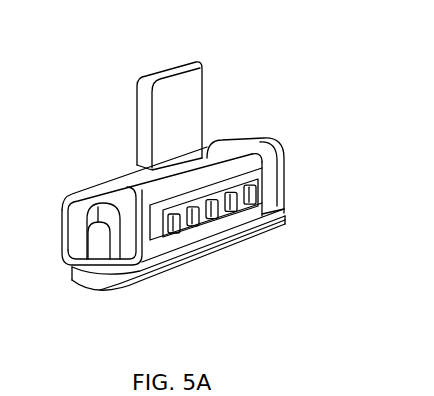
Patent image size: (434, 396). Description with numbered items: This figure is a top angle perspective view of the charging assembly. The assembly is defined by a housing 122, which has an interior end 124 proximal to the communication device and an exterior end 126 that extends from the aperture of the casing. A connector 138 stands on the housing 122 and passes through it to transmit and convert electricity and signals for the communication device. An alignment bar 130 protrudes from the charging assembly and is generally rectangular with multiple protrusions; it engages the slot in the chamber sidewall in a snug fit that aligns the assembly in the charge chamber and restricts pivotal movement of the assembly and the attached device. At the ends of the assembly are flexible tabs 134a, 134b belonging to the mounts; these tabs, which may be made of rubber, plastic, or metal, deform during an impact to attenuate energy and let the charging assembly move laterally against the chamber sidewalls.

The housing 122 is at (266, 217).
The interior end 124 is at (113, 178).
The exterior end 126 is at (102, 291).
The alignment bar 130 is at (213, 217).
The flexible tab 134a is at (75, 237).
The flexible tab 134b is at (132, 248).
The connector 138 is at (137, 86).